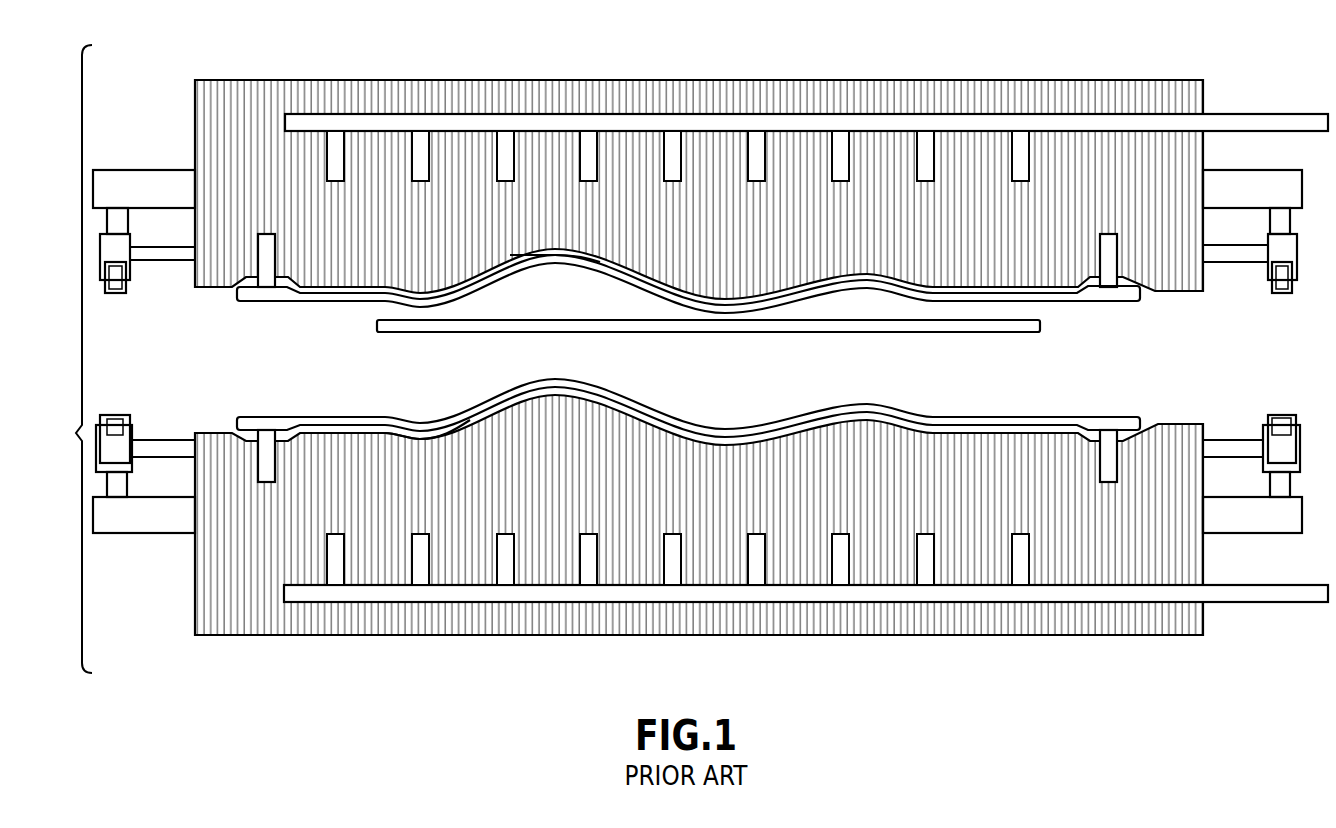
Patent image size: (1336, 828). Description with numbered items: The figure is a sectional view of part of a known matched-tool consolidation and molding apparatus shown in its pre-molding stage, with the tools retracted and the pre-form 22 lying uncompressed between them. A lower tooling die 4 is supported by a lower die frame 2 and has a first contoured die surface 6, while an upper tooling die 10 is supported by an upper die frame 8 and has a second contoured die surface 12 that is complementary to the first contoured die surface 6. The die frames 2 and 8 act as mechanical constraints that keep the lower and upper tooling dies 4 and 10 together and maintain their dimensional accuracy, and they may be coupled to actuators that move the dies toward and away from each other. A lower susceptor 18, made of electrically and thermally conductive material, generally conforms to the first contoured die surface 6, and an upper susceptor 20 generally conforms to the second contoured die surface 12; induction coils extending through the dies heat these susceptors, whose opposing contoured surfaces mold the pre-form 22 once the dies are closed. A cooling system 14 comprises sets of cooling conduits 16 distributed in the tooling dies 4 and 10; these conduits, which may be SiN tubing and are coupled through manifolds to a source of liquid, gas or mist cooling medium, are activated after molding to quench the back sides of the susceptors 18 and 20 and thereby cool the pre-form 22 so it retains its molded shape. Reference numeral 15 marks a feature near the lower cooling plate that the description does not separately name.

The lower die frame 2 is at (141, 518).
The lower tooling die 4 is at (470, 635).
The first contoured die surface 6 is at (432, 433).
The upper die frame 8 is at (147, 188).
The upper tooling die 10 is at (341, 80).
The second contoured die surface 12 is at (567, 254).
The cooling system 14 is at (1265, 111).
The lower heating plate surface 15 is at (1082, 593).
The cooling conduits 16 is at (923, 148).
The lower susceptor 18 is at (358, 417).
The upper susceptor 20 is at (1072, 302).
The pre-form 22 is at (926, 333).